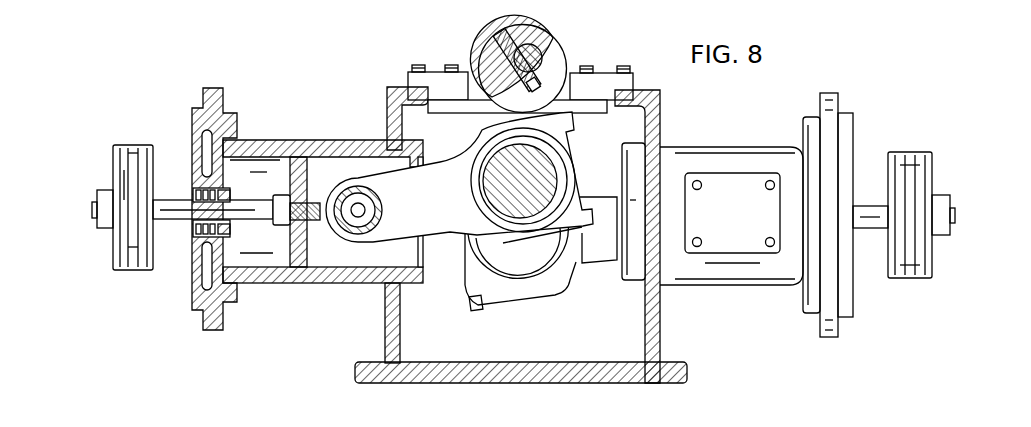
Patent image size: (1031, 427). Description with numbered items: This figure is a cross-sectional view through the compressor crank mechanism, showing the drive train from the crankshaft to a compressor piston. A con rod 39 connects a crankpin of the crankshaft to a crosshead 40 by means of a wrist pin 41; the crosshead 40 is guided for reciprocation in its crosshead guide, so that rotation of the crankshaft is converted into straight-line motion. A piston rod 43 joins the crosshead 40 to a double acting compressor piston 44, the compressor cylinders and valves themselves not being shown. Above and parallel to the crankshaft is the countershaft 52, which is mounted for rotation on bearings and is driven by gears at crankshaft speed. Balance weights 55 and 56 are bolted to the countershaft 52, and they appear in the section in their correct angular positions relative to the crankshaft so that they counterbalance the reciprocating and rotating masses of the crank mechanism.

The con rods 39 is at (449, 158).
The crossheads 40 is at (320, 156).
The wrist pins 41 is at (374, 211).
The piston rods 43 is at (173, 208).
The double acting compressor pistons 44 is at (133, 153).
The countershaft 52 is at (541, 55).
The balance weight 55 is at (535, 30).
The balance weight 56 is at (555, 65).